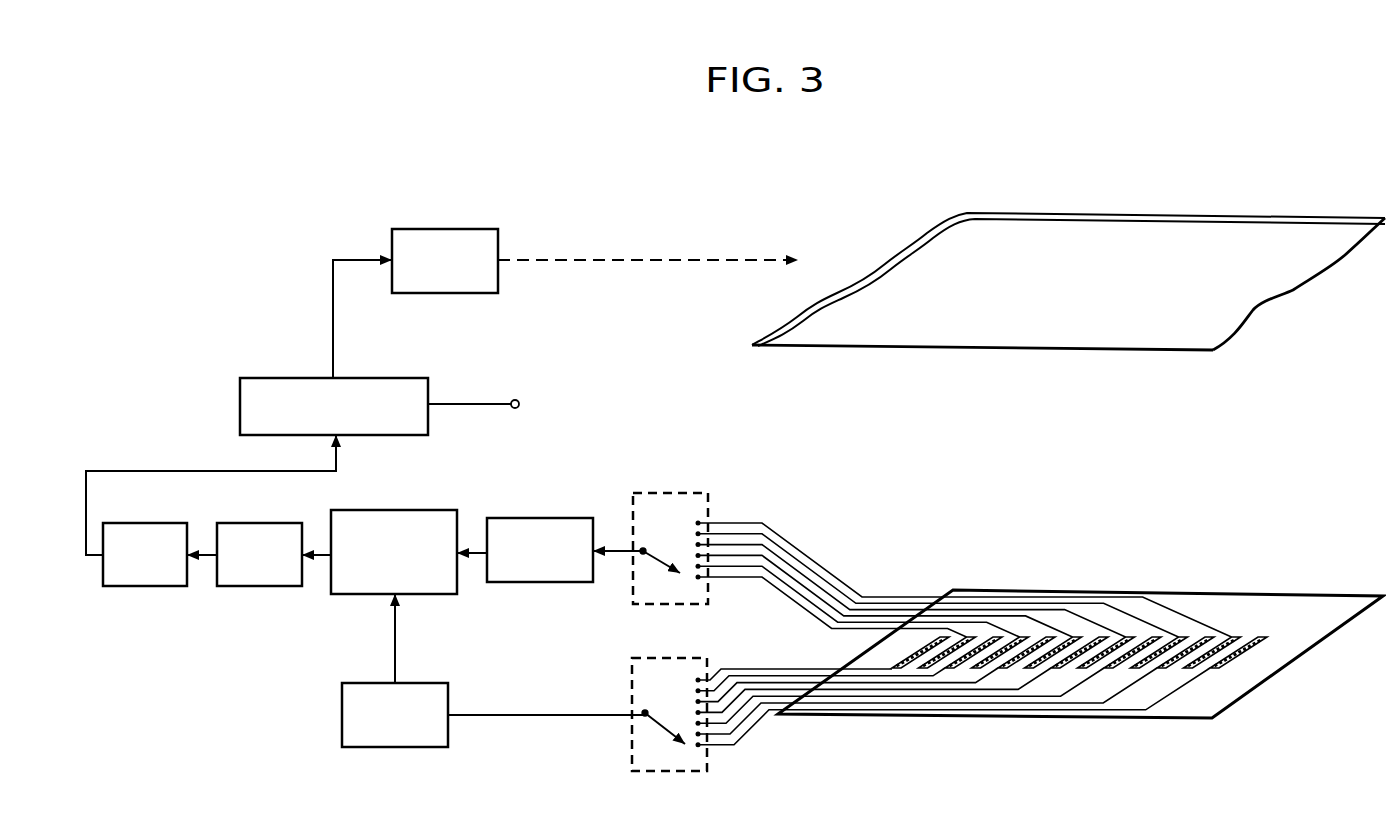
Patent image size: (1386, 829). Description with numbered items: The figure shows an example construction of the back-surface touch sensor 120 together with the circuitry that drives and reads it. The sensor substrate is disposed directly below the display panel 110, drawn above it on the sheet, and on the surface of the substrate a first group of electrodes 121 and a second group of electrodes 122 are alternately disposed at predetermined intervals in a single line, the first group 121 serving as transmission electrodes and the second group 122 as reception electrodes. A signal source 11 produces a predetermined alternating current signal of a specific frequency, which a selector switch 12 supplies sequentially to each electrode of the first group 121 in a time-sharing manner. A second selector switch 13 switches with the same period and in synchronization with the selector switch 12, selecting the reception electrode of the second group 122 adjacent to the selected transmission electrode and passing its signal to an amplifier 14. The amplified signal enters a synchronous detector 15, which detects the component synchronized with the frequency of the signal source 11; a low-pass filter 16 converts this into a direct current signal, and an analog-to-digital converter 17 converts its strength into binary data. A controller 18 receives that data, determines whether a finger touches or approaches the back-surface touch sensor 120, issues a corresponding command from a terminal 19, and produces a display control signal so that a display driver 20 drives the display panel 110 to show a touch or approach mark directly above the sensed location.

The signal source 11 is at (380, 747).
The selector switch 12 is at (648, 771).
The selector switch 13 is at (642, 604).
The amplifier 14 is at (517, 582).
The synchronous detector 15 is at (360, 594).
The low-pass filter 16 is at (260, 586).
The analog-to-digital converter 17 is at (165, 586).
The controller 18 is at (392, 378).
The terminal 19 is at (519, 404).
The display driver 20 is at (458, 229).
The display panel 110 is at (930, 347).
The back-surface touch sensor 120 is at (1127, 602).
The first group of electrodes 121 is at (1234, 660).
The second group of electrodes 122 is at (1223, 637).